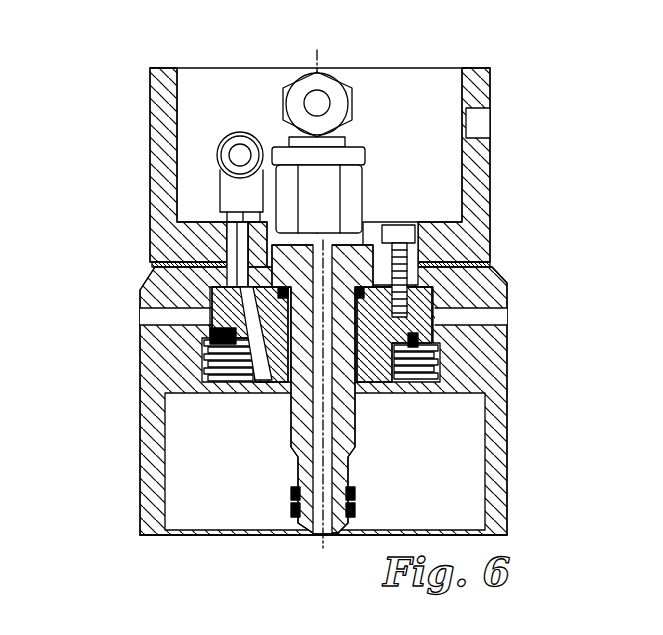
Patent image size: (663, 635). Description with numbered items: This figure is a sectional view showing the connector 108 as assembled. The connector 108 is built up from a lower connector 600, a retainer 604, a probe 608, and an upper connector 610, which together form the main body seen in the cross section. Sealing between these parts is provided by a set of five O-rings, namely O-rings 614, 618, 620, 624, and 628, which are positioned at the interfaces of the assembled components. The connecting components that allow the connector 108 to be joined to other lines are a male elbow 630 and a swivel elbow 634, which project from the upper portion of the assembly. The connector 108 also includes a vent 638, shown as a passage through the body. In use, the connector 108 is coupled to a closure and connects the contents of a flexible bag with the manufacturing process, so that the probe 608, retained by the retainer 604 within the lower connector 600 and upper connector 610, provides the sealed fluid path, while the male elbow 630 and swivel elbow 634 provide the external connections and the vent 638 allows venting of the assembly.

The connector 108 is at (128, 116).
The lower connector 600 is at (478, 350).
The retainer 604 is at (437, 300).
The probe 608 is at (348, 433).
The upper connector 610 is at (490, 180).
The O-ring 614 is at (210, 335).
The O-ring 618 is at (240, 252).
The O-ring 620 is at (233, 214).
The O-ring 624 is at (346, 490).
The O-ring 628 is at (350, 510).
The male elbow 630 is at (322, 80).
The swivel elbow 634 is at (229, 134).
The vent 638 is at (487, 316).